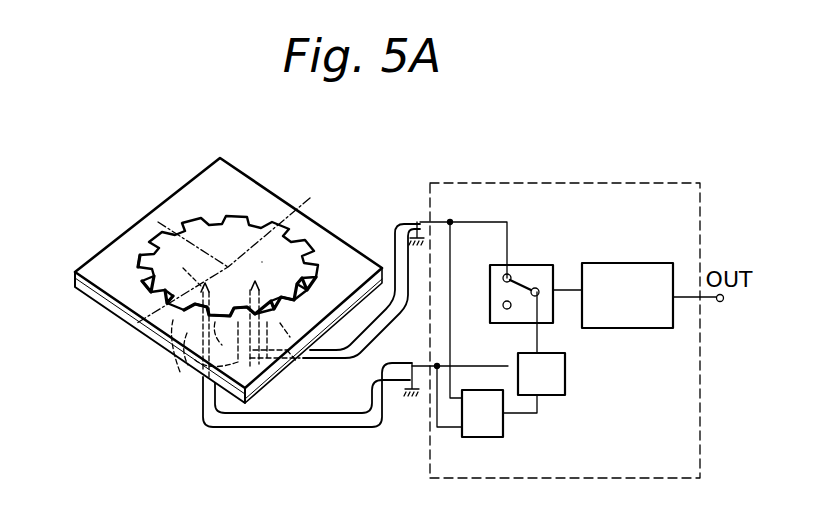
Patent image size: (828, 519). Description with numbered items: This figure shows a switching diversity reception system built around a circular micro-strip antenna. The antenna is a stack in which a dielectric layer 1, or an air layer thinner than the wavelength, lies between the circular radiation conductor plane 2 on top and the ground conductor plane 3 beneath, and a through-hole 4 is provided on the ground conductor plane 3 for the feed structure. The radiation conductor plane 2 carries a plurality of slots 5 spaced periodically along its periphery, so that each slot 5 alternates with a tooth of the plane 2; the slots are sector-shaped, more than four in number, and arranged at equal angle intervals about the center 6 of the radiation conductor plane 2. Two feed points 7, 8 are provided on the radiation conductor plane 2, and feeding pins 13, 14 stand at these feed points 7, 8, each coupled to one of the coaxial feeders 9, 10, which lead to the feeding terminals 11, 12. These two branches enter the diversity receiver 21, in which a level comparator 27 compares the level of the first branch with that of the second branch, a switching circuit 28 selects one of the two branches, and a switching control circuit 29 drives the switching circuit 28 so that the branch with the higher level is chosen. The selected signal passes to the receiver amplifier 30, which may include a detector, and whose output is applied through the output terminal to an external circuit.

The dielectric layer 1 is at (354, 252).
The radiation conductor plane 2 is at (297, 228).
The ground conductor plane 3 is at (95, 300).
The through-hole 4 is at (182, 328).
The slot 5 is at (183, 219).
The center of the radiation conductor plane 6 is at (228, 267).
The feed point 7 is at (183, 266).
The feed point 8 is at (267, 253).
The coaxial feeder 9 is at (234, 428).
The coaxial feeder 10 is at (334, 360).
The feeding terminal 11 is at (413, 362).
The feeding terminal 12 is at (410, 218).
The feeding pin 13 is at (211, 288).
The feeding pin 14 is at (262, 288).
The diversity receiver 21 is at (594, 181).
The level comparator 27 is at (492, 438).
The switching circuit 28 is at (538, 263).
The switching control circuit 29 is at (567, 376).
The receiver amplifier 30 is at (640, 262).